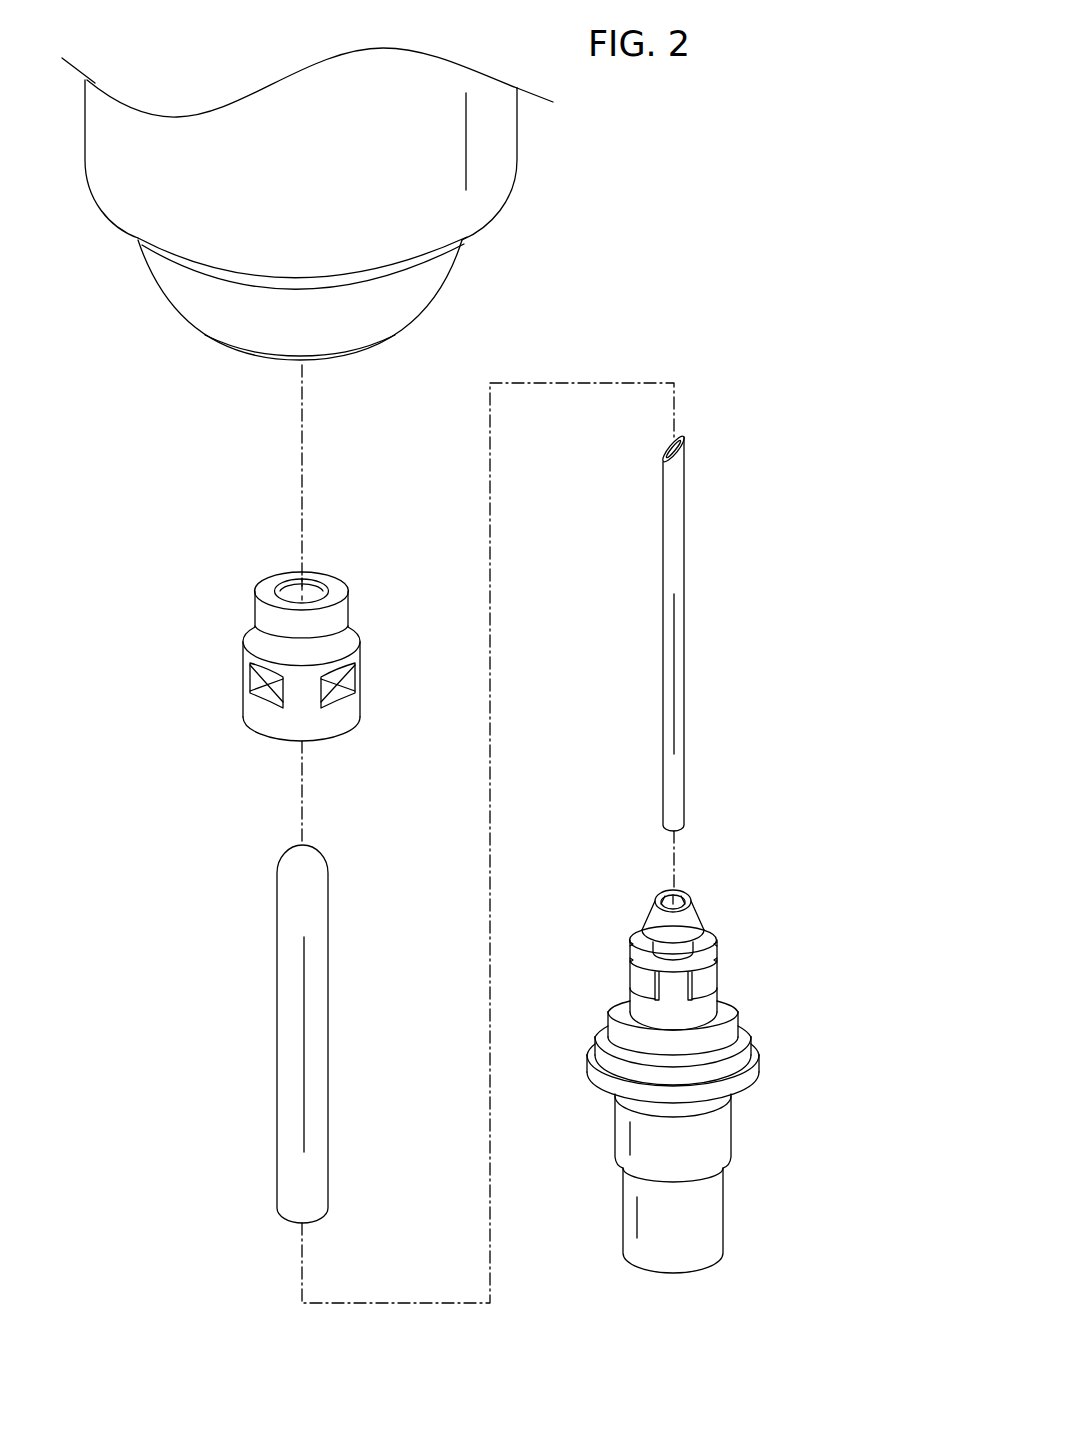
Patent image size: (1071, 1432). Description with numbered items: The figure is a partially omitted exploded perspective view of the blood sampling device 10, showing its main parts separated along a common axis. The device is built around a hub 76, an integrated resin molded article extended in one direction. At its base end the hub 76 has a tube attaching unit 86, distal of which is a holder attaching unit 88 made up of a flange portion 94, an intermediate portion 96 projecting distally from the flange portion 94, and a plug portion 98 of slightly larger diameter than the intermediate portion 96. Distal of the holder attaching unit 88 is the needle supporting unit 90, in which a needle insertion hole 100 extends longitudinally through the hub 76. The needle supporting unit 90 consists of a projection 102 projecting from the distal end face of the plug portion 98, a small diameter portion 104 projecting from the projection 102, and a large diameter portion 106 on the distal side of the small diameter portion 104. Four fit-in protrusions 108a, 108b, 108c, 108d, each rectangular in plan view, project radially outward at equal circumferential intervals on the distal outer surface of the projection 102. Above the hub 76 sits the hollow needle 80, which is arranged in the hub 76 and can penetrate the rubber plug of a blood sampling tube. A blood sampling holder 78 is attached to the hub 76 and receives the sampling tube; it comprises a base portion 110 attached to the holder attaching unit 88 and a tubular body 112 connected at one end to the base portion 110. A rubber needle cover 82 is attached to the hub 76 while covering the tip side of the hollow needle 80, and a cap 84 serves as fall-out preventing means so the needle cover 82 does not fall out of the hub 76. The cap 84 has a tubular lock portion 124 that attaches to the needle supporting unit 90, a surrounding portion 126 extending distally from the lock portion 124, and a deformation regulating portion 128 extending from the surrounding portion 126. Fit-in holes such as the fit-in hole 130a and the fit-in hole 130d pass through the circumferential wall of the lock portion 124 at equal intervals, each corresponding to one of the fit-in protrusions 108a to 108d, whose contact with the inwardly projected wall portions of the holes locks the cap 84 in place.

The blood sampling device 10 is at (727, 196).
The hub 76 is at (704, 867).
The blood sampling holder 78 is at (553, 132).
The hollow needle 80 is at (672, 514).
The rubber needle cover 82 is at (321, 904).
The cap 84 is at (361, 555).
The tube attaching unit 86 is at (713, 1217).
The holder attaching unit 88 is at (822, 1015).
The needle supporting unit 90 is at (718, 998).
The flange portion 94 is at (752, 1078).
The intermediate portion 96 is at (733, 1053).
The plug portion 98 is at (733, 1030).
The needle insertion hole 100 is at (672, 889).
The projection 102 is at (650, 1013).
The small diameter portion 104 is at (660, 947).
The large diameter portion 106 is at (697, 901).
The fit-in protrusion 108a is at (640, 982).
The fit-in protrusion 108b is at (640, 928).
The fit-in protrusion 108c is at (708, 928).
The fit-in protrusion 108d is at (710, 978).
The base portion 110 is at (433, 282).
The tubular body 112 is at (497, 157).
The lock portion 124 is at (250, 703).
The surrounding portion 126 is at (336, 632).
The deformation regulating portion 128 is at (336, 592).
The fit-in hole 130a is at (253, 680).
The fit-in hole 130d is at (350, 678).